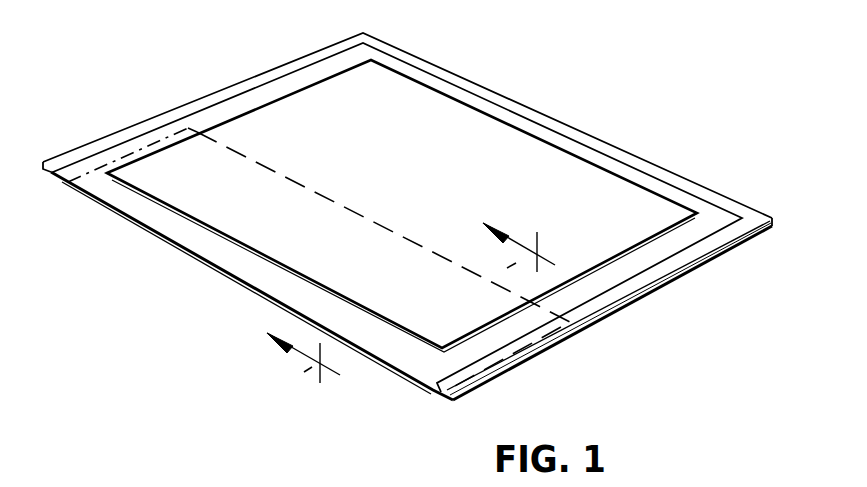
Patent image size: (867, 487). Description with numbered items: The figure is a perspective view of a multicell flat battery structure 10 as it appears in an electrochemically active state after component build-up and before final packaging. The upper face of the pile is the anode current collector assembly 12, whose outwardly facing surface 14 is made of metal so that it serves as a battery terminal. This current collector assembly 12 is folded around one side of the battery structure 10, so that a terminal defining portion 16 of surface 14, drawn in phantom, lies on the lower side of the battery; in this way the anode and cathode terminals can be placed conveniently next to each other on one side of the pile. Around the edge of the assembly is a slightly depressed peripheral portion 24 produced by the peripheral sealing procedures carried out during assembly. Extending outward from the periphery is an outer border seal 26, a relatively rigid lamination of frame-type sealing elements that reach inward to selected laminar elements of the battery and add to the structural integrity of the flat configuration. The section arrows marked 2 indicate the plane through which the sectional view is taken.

The multicell flat battery structure 10 is at (615, 129).
The anode current collector assembly 12 is at (642, 219).
The outwardly facing surface 14 is at (497, 134).
The terminal defining portion 16 is at (557, 345).
The depressed peripheral portion 24 is at (100, 172).
The outer border seal 26 is at (238, 82).
The section line 2- 2 is at (417, 305).